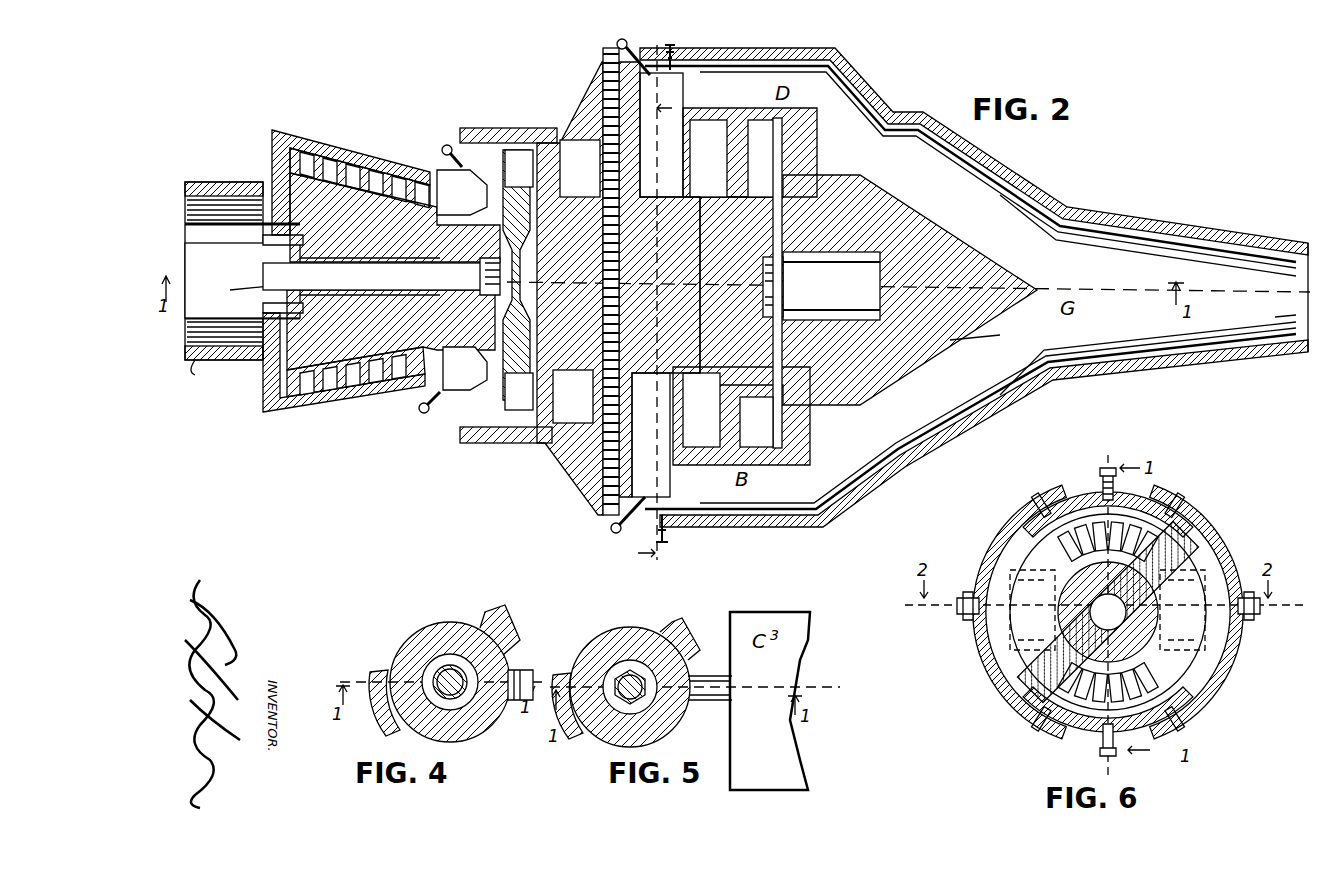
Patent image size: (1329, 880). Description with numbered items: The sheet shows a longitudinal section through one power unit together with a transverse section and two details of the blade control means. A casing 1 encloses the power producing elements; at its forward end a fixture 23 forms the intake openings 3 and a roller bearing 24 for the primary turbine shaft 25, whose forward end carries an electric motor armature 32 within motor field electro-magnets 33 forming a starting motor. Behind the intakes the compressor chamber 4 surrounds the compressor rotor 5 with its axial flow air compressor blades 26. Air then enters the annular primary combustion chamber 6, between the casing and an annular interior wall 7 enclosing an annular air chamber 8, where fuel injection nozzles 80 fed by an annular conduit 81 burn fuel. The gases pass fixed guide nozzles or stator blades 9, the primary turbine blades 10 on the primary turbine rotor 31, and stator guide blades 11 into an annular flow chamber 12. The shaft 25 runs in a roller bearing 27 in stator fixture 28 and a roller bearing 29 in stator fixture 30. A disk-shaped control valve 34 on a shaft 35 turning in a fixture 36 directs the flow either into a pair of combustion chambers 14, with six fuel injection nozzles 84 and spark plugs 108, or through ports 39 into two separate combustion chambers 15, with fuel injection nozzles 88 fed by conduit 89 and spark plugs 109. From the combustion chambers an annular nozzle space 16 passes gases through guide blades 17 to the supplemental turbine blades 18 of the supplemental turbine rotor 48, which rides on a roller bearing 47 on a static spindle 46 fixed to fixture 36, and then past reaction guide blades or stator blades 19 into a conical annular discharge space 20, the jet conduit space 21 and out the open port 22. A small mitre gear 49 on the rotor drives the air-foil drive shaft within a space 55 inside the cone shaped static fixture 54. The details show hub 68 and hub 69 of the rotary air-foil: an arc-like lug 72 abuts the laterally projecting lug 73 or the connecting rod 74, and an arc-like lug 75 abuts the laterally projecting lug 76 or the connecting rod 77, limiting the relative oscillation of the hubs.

In FIG. 2, the casing 1 is at (300, 150).
In FIG. 2, the intake openings 3 is at (273, 142).
In FIG. 2, the compressor chamber 4 is at (332, 165).
In FIG. 2, the compressor rotor 5 is at (335, 203).
In FIG. 2, the primary combustion chamber 6 is at (463, 150).
In FIG. 2, the annular interior wall 7 is at (478, 128).
In FIG. 2, the annular air chamber 8 is at (462, 280).
In FIG. 2, the guide nozzles or stator blades 9 is at (500, 150).
In FIG. 2, the primary turbine blades 10 is at (518, 278).
In FIG. 2, the stator guide blades 11 is at (575, 272).
In FIG. 2, the annular flow chamber 12 is at (570, 288).
In FIG. 2, the combustion chambers 15 is at (740, 492).
In FIG. 6, the combustion chambers 15 is at (1000, 555).
In FIG. 2, the annular nozzle space 16 is at (745, 286).
In FIG. 2, the guide blades 17 is at (726, 150).
In FIG. 6, the guide blades 17 is at (1195, 512).
In FIG. 2, the supplemental turbine blades 18 is at (828, 438).
In FIG. 2, the reaction guide blades or stator blades 19 is at (800, 150).
In FIG. 6, the reaction guide blades or stator blades 19 is at (1195, 700).
In FIG. 2, the conical annular discharge space 20 is at (868, 290).
In FIG. 2, the jet conduit space 21 is at (1123, 319).
In FIG. 2, the open port 22 is at (1285, 316).
In FIG. 2, the fixture 23 is at (272, 190).
In FIG. 2, the roller bearing 24 is at (242, 280).
In FIG. 2, the primary turbine shaft 25 is at (256, 286).
In FIG. 2, the axial flow air compressor blades 26 is at (305, 152).
In FIG. 2, the roller bearing 27 is at (381, 276).
In FIG. 2, the stator fixture 28 is at (530, 440).
In FIG. 2, the roller bearing 29 is at (573, 400).
In FIG. 2, the stator fixture 30 is at (545, 440).
In FIG. 2, the primary turbine rotor 31 is at (518, 215).
In FIG. 2, the electric motor armature 32 is at (200, 352).
In FIG. 2, the motor field electro-magnets 33 is at (193, 200).
In FIG. 2, the disk-shaped control valve 34 is at (596, 98).
In FIG. 2, the shaft 35 is at (649, 384).
In FIG. 2, the fixture 36 is at (659, 279).
In FIG. 2, the ports 39 is at (585, 496).
In FIG. 2, the static spindle 46 is at (699, 400).
In FIG. 2, the roller bearing 47 is at (796, 287).
In FIG. 2, the supplemental turbine rotor 48 is at (756, 414).
In FIG. 2, the small mitre gear 49 is at (805, 273).
In FIG. 2, the static fixture 54 is at (987, 334).
In FIG. 2, the space 55 is at (785, 296).
In FIG. 4, the hub 68 is at (410, 660).
In FIG. 5, the hub 69 is at (612, 640).
In FIG. 4, the arc-like lug 72 is at (380, 726).
In FIG. 4, the laterally projecting lug 73 is at (498, 612).
In FIG. 4, the connecting rod 74 is at (525, 668).
In FIG. 5, the arc-like lug 75 is at (566, 735).
In FIG. 5, the laterally projecting lug 76 is at (676, 620).
In FIG. 5, the connecting rod 77 is at (705, 702).
In FIG. 2, the fuel injection nozzles 80 is at (447, 145).
In FIG. 2, the annular conduit 81 is at (440, 150).
In FIG. 6, the fuel injection nozzles 84 is at (1060, 510).
In FIG. 2, the fuel injection nozzles 88 is at (612, 46).
In FIG. 2, the conduit 89 is at (612, 530).
In FIG. 6, the spark plugs 108 is at (1100, 468).
In FIG. 2, the spark plugs 109 is at (668, 536).
In FIG. 6, the spark plugs 109 is at (960, 615).
In FIG. 6, the combustion chambers 14 is at (1185, 505).